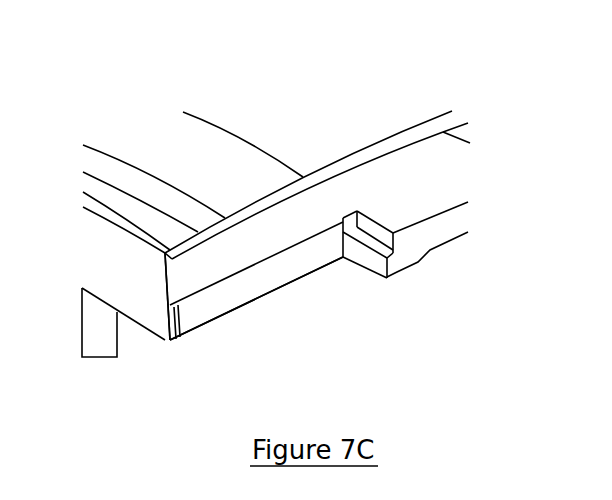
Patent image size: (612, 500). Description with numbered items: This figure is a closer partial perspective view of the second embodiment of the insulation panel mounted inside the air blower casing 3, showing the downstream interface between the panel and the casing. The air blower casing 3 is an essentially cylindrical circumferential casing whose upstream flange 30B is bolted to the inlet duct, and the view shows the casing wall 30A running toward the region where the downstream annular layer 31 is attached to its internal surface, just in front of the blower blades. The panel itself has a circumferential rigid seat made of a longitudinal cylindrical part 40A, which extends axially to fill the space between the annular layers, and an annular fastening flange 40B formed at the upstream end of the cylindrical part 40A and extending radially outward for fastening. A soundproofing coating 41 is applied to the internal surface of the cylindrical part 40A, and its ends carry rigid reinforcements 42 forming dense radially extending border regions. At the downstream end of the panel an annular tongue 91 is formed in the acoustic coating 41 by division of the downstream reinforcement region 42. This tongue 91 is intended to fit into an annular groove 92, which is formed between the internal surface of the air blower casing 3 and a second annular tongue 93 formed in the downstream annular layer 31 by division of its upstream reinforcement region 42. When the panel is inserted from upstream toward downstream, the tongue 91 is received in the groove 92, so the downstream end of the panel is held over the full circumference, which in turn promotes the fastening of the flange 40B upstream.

The air blower casing 3 is at (219, 126).
The first rail member 30A is at (332, 122).
The upstream flange 30B is at (113, 213).
The downstream annular layer 31 is at (458, 157).
The longitudinal cylindrical part 40A is at (200, 272).
The annular fastening flange 40B is at (92, 263).
The soundproofing coating 41 is at (242, 285).
The rigid reinforcement 42 is at (170, 340).
The annular tongue 91 is at (343, 218).
The annular groove 92 is at (387, 238).
The annular tongue 93 is at (395, 267).